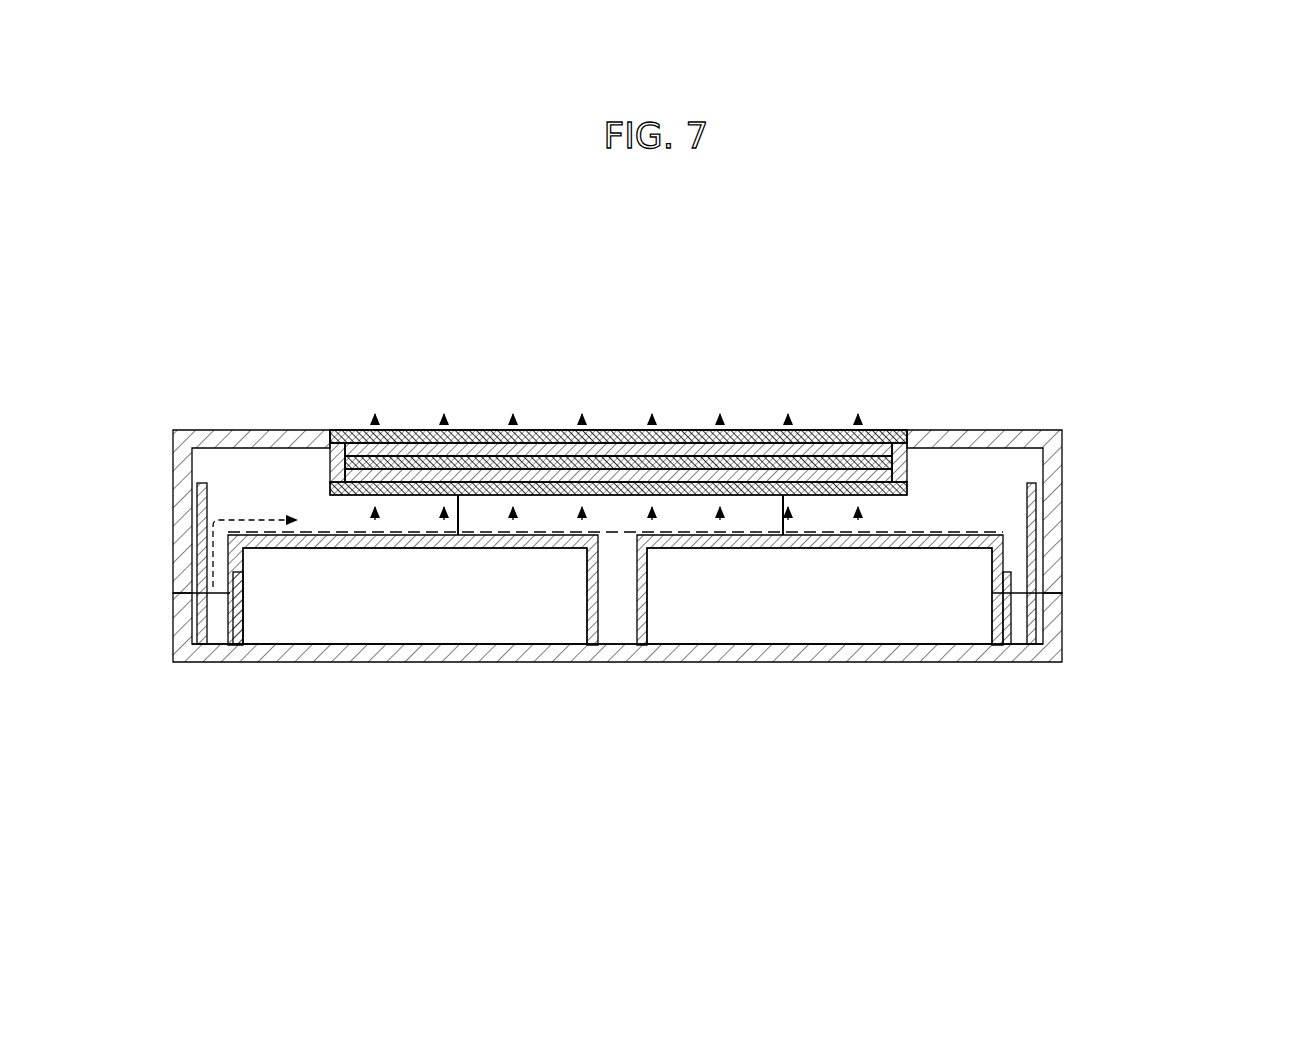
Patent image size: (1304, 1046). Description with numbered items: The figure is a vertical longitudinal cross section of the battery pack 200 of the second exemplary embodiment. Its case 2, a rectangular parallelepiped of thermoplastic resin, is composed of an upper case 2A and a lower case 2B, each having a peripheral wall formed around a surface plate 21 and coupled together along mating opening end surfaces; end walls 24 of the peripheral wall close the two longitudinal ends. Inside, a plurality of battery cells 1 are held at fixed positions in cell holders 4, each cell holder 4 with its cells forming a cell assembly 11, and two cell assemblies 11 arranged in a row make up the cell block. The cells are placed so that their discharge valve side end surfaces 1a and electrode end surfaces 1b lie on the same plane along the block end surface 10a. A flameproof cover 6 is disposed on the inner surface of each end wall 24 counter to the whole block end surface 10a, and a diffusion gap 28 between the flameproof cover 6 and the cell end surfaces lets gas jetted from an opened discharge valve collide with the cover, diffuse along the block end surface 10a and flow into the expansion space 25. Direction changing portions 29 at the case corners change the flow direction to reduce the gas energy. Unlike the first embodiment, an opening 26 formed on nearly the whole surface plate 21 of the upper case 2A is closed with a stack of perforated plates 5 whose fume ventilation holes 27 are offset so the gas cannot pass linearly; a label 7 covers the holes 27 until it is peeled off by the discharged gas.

The battery pack 200 is at (1030, 303).
The case 2 is at (720, 546).
The upper case 2A is at (1093, 483).
The lower case 2B is at (694, 627).
The battery cell 1 is at (616, 646).
The discharge valve side end surface 1a is at (230, 598).
The electrode end surface 1b is at (1060, 600).
The cell holder 4 is at (340, 547).
The cell assembly 11 is at (616, 670).
The perforated plate 5 is at (418, 430).
The flameproof cover 6 is at (198, 527).
The label 7 is at (548, 430).
The block end surface 10a is at (232, 556).
The surface plate 21 is at (620, 660).
The end wall 24 is at (183, 490).
The expansion space 25 is at (355, 509).
The opening 26 is at (910, 432).
The fume ventilation hole 27 is at (683, 430).
The diffusion gap 28 is at (218, 625).
The direction changing portion 29 is at (228, 478).